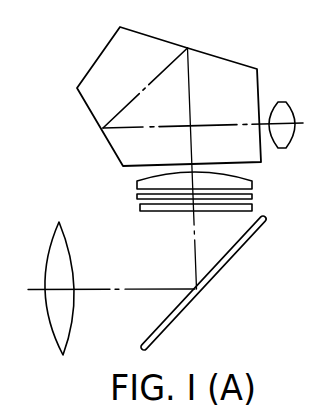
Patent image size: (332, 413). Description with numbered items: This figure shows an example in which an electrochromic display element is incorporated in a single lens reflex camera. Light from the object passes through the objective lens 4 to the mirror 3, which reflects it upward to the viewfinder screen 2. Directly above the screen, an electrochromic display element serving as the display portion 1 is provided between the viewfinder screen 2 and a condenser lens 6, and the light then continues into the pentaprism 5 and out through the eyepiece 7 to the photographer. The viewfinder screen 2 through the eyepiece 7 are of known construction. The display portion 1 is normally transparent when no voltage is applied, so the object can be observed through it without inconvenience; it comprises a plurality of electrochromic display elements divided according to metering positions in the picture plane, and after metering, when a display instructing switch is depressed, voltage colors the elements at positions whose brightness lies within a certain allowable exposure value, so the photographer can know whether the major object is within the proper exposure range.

The display portion 1 is at (137, 198).
The viewfinder screen 2 is at (150, 212).
The mirror 3 is at (185, 309).
The objective lens 4 is at (52, 327).
The pentaprism 5 is at (173, 42).
The condenser lens 6 is at (137, 186).
The eyepiece 7 is at (286, 102).